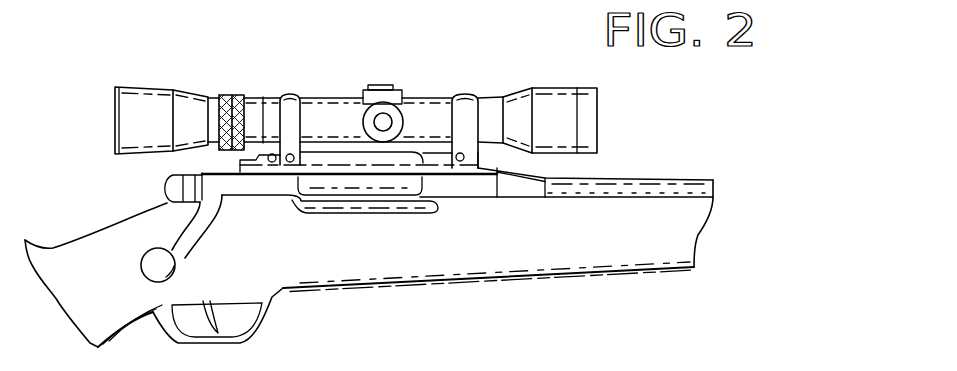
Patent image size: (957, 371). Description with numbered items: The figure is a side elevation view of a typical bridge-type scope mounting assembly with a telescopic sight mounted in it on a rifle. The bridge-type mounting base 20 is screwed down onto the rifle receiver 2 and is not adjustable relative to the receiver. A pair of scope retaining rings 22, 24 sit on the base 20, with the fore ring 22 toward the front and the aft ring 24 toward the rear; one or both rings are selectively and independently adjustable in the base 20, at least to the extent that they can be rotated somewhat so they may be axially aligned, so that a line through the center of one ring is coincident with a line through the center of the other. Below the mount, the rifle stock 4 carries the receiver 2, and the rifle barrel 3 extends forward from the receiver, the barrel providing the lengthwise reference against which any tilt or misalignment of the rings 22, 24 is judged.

The rifle receiver 2 is at (268, 187).
The rifle barrel 3 is at (595, 164).
The rifle stock 4 is at (596, 236).
The bridge-type mounting base 20 is at (387, 155).
The fore scope retaining ring 22 is at (293, 96).
The aft scope retaining ring 24 is at (464, 95).